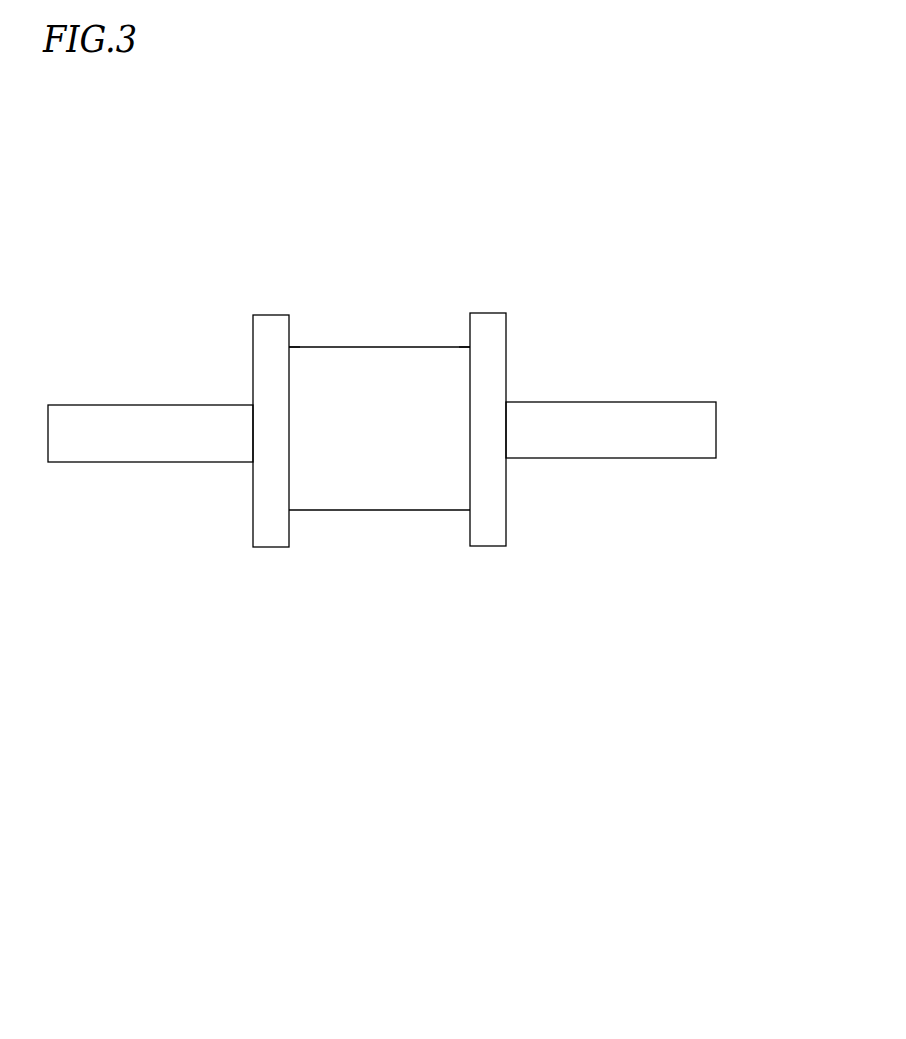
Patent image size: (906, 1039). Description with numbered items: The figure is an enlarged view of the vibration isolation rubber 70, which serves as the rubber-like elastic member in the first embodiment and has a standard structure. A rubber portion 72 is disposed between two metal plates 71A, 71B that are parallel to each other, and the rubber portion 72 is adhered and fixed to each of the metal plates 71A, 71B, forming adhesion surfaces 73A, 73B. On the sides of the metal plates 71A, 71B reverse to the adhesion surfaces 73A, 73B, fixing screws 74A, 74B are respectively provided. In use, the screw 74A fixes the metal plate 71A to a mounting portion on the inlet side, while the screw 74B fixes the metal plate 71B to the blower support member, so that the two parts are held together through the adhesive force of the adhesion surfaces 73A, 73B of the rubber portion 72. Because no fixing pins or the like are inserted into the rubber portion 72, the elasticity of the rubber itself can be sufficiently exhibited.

The vibration isolation rubber 70 is at (405, 788).
The metal plate 71A is at (272, 547).
The metal plate 71B is at (490, 547).
The rubber portion 72 is at (373, 347).
The adhesion surface 73A is at (289, 397).
The adhesion surface 73B is at (470, 390).
The fixing screw 74A is at (102, 462).
The fixing screw 74B is at (661, 400).